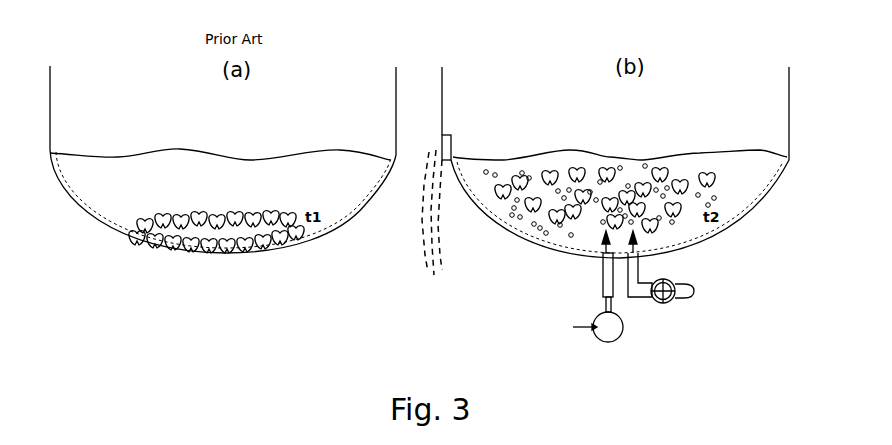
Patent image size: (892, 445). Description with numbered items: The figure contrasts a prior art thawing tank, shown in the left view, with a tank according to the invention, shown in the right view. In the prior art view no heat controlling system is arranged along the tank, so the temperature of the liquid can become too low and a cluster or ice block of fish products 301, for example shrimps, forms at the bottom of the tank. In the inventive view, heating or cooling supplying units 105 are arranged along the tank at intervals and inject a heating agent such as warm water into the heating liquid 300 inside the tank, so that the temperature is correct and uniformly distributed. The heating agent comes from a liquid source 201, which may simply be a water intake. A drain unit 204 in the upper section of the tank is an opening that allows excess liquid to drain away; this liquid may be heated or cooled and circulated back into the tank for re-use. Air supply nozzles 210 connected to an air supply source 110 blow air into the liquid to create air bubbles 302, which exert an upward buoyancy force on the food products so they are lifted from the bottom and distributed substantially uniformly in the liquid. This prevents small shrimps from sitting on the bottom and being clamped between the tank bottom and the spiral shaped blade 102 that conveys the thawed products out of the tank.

In FIG. 3a, the spiral shaped blade 102 is at (73, 190).
In FIG. 3b, the spiral shaped blade 102 is at (463, 192).
In FIG. 3a, the dumplings (sunk, prior art) 301 is at (210, 250).
In FIG. 3b, the drain unit 204 is at (450, 137).
In FIG. 3b, the heating liquid 300 is at (617, 157).
In FIG. 3b, the air bubbles 302 is at (627, 188).
In FIG. 3b, the air supply nozzles 210 is at (603, 276).
In FIG. 3b, the air supply source 110 is at (621, 321).
In FIG. 3b, the heating or cooling supplying unit 105 is at (640, 259).
In FIG. 3b, the liquid source 201 is at (690, 286).